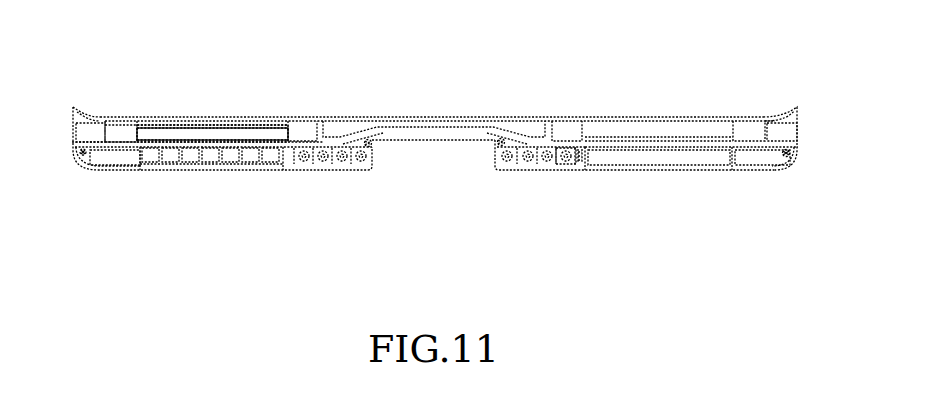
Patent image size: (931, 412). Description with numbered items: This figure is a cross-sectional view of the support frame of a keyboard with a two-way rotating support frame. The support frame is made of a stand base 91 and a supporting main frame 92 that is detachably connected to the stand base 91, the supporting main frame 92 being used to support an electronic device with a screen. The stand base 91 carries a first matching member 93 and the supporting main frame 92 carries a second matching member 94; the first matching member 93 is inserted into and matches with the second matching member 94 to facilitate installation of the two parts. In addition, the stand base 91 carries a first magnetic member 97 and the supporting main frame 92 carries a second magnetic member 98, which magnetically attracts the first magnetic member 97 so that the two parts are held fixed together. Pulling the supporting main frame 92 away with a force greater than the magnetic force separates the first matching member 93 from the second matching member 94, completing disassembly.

The stand base 91 is at (157, 162).
The supporting main frame 92 is at (148, 121).
The first matching member 93 is at (567, 141).
The second matching member 94 is at (568, 121).
The first magnetic member 97 is at (213, 157).
The second magnetic member 98 is at (237, 136).